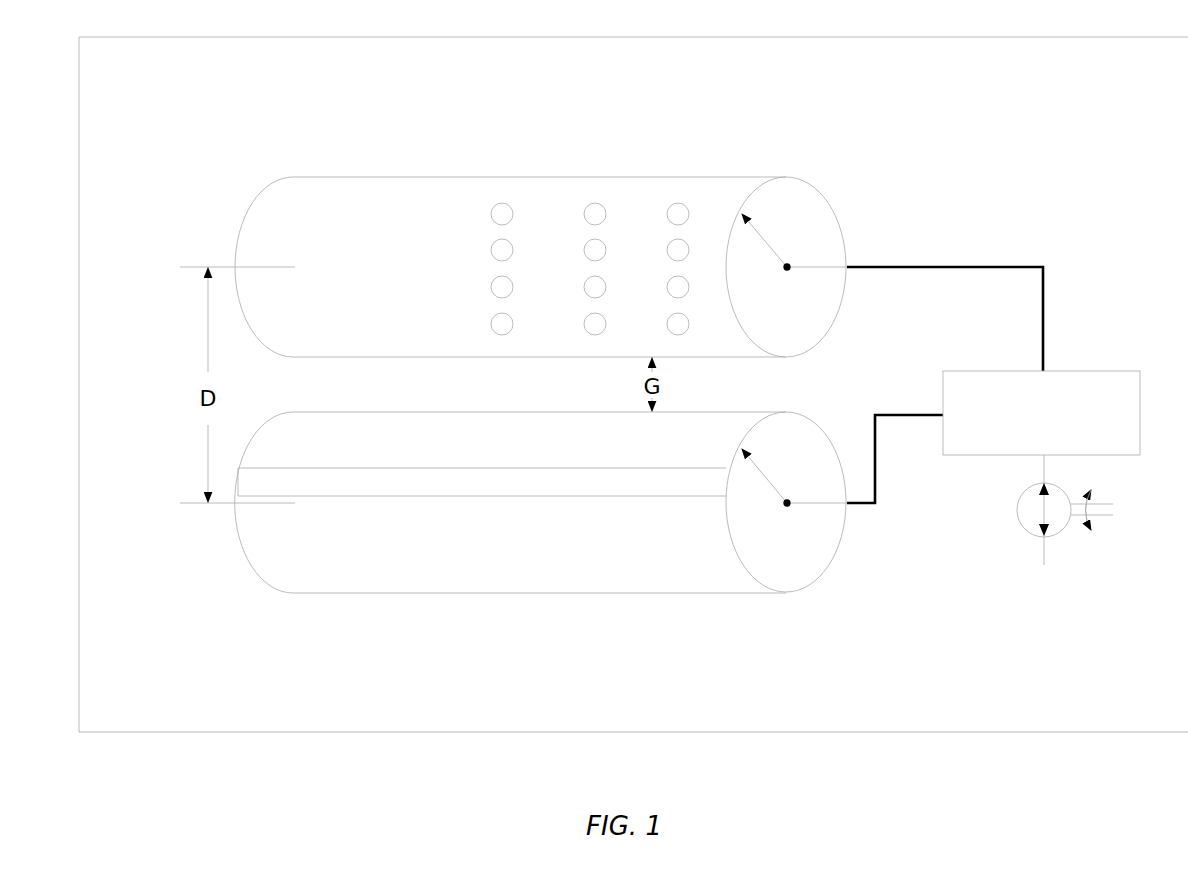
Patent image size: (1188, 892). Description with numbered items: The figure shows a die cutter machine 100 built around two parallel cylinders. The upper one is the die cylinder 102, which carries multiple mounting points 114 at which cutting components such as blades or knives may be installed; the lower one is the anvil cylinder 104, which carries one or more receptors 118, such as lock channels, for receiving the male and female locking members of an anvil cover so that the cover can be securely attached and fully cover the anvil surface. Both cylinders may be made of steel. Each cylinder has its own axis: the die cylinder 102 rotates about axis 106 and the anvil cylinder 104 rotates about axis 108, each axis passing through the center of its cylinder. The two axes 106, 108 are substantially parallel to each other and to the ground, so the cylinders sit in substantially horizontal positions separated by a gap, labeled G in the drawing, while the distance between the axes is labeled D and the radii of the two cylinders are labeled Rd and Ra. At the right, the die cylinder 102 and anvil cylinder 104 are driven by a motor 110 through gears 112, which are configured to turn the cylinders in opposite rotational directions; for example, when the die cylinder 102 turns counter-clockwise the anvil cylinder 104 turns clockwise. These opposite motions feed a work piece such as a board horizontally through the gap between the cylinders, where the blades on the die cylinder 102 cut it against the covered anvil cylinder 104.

The die cutter machine 100 is at (633, 384).
The die cylinder 102 is at (621, 175).
The anvil cylinder 104 is at (652, 596).
The axis 106 is at (264, 264).
The axis 108 is at (265, 506).
The motor 110 is at (1071, 553).
The gears 112 is at (1041, 413).
The mounting points 114 is at (589, 201).
The receptors 118 is at (541, 499).